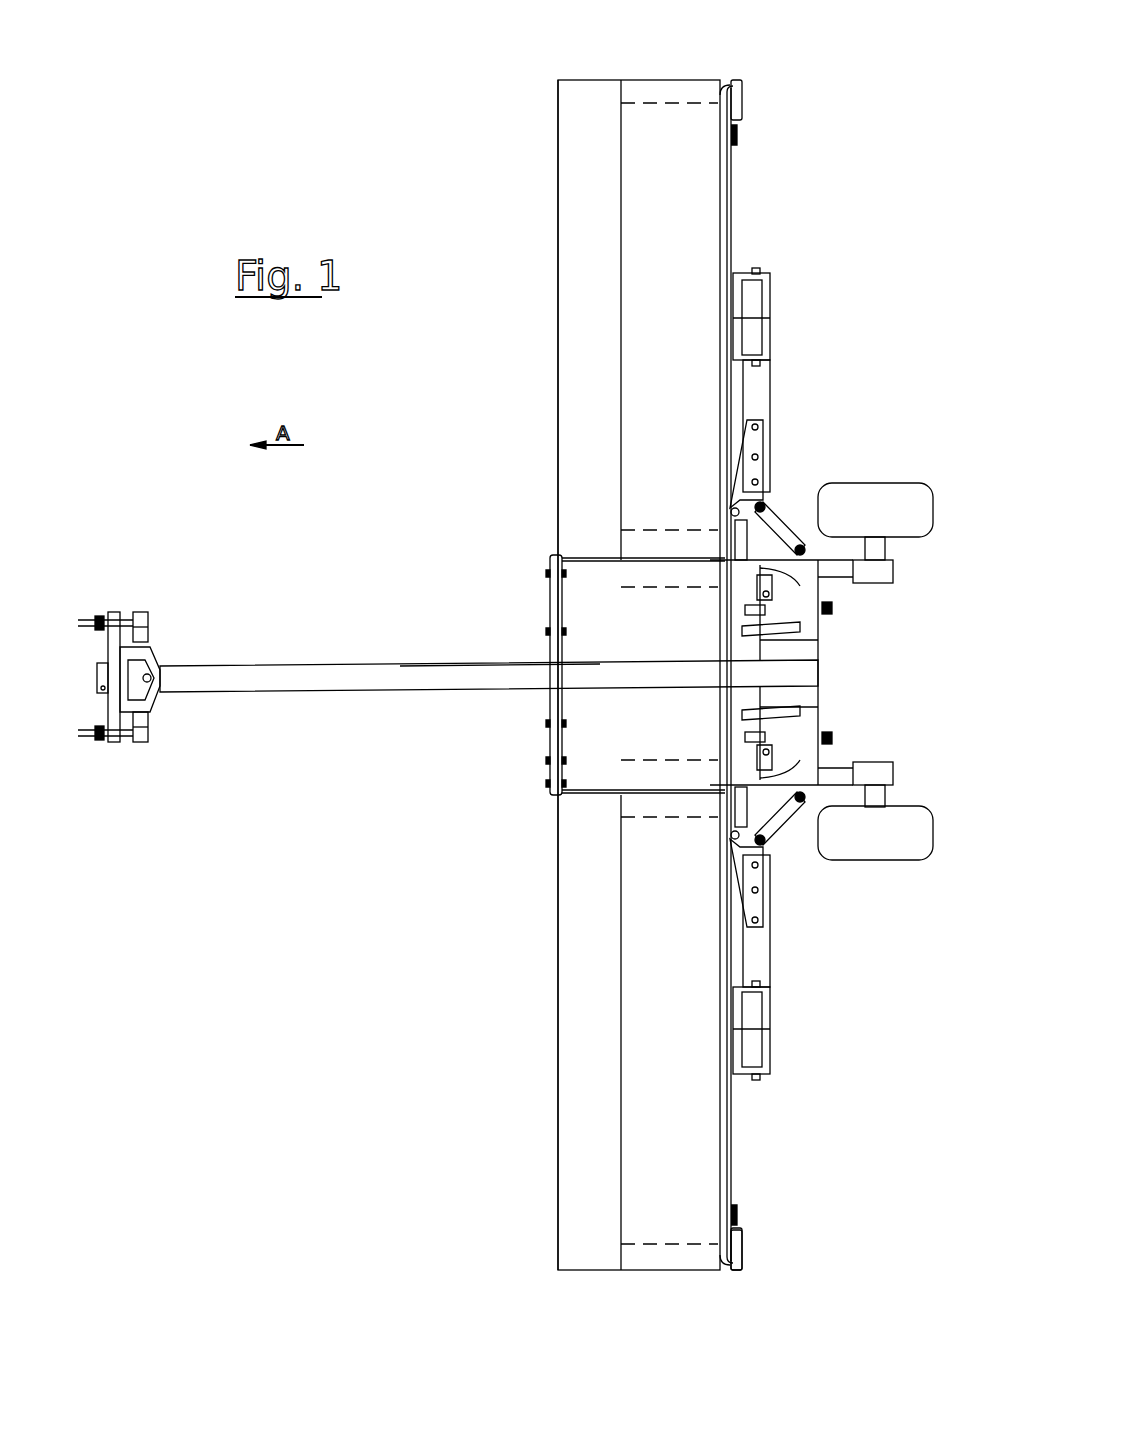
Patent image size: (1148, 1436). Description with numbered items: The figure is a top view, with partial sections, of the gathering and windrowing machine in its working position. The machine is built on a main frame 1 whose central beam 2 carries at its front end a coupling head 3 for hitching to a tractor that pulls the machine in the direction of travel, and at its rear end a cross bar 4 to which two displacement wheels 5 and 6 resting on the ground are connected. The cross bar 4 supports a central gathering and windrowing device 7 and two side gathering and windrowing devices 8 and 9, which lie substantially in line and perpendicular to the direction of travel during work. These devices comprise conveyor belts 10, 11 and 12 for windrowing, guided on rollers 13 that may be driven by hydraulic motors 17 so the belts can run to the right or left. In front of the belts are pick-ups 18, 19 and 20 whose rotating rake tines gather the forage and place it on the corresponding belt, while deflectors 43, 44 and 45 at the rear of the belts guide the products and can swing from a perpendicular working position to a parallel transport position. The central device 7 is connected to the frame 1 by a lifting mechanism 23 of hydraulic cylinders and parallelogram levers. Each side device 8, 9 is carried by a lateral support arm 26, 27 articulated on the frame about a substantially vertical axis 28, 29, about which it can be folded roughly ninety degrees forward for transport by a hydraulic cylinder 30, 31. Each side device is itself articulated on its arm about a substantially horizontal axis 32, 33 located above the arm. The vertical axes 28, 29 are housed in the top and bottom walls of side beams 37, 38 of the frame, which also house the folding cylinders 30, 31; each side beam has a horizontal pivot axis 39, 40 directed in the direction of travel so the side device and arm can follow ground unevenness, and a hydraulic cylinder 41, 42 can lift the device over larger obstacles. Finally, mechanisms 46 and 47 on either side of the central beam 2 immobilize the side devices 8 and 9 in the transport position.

The main frame 1 is at (345, 697).
The central beam 2 is at (212, 672).
The coupling head 3 is at (105, 618).
The cross bar 4 is at (825, 633).
The displacement wheel 5 is at (882, 497).
The displacement wheel 6 is at (880, 845).
The central gathering and windrowing device 7 is at (575, 800).
The side gathering and windrowing device 8 is at (548, 260).
The side gathering and windrowing device 9 is at (548, 1138).
The conveyor belt 10 is at (680, 738).
The conveyor belt 11 is at (688, 248).
The conveyor belt 12 is at (640, 965).
The rollers 13 is at (692, 93).
The hydraulic motor 17 is at (742, 1250).
The pick-up 18 is at (585, 597).
The pick-up 19 is at (580, 348).
The pick-up 20 is at (570, 1203).
The lifting mechanism 23 is at (760, 703).
The support arm 26 is at (760, 395).
The support arm 27 is at (760, 957).
The vertical axis of articulation 28 is at (735, 510).
The vertical axis of articulation 29 is at (735, 838).
The hydraulic cylinder 30 is at (772, 517).
The hydraulic cylinder 31 is at (772, 832).
The axis 32 is at (762, 295).
The axis 33 is at (762, 1052).
The side beam 37 is at (792, 527).
The side beam 38 is at (781, 850).
The pivot axis 39 is at (785, 572).
The pivot axis 40 is at (797, 780).
The hydraulic cylinder 41 is at (738, 545).
The hydraulic cylinder 42 is at (725, 805).
The deflector 43 is at (715, 638).
The deflector 44 is at (718, 392).
The deflector 45 is at (718, 1120).
The immobilization mechanism 46 is at (545, 615).
The immobilization mechanism 47 is at (545, 740).